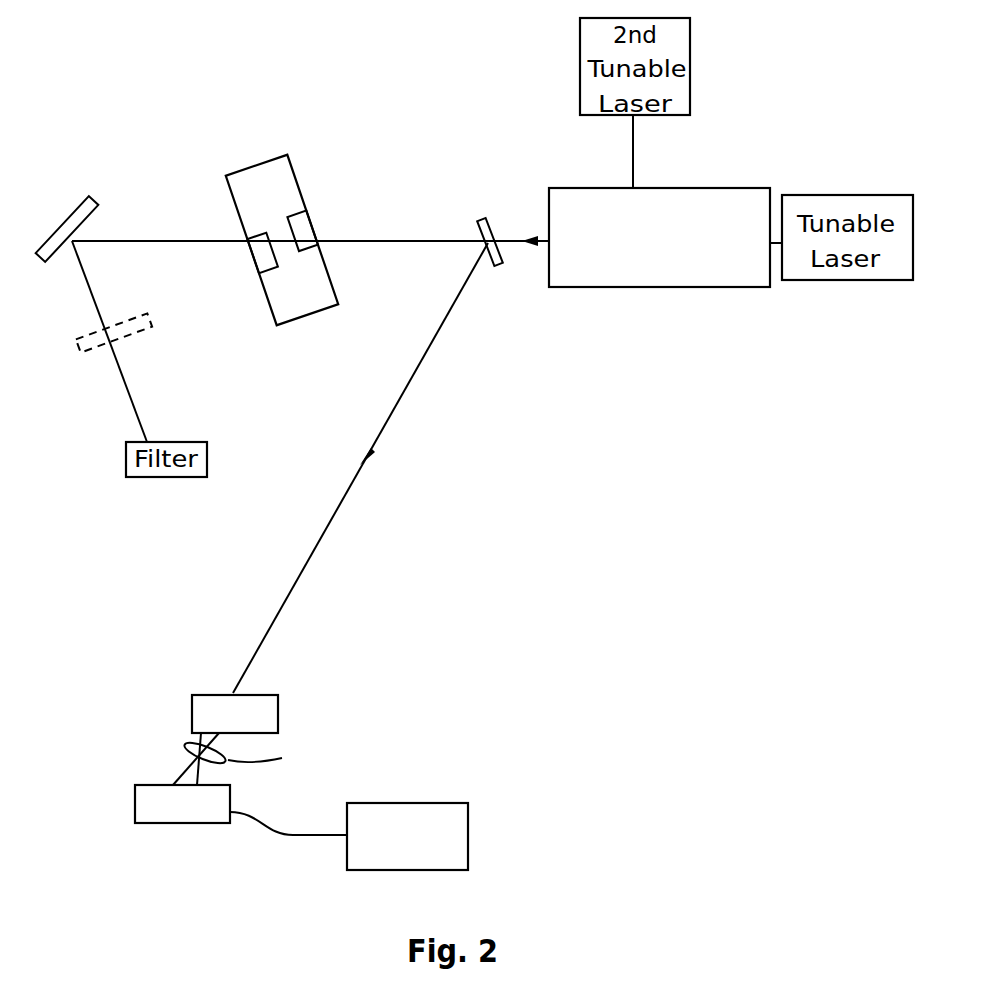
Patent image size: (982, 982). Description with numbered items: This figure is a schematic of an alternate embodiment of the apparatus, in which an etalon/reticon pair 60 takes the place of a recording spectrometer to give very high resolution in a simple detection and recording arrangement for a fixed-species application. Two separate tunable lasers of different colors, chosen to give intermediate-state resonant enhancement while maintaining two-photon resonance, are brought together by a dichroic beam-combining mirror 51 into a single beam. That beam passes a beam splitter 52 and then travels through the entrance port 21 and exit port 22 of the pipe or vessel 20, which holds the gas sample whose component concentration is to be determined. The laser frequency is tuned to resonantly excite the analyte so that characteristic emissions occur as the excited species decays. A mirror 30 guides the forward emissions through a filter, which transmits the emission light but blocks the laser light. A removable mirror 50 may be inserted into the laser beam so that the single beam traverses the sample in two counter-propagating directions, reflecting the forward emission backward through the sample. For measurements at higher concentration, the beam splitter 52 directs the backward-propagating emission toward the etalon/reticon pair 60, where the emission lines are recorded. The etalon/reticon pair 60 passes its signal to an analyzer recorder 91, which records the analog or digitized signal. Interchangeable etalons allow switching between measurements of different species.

The pipe or vessel 20 is at (277, 260).
The entrance port 21 is at (313, 231).
The exit port 22 is at (241, 245).
The mirror 30 is at (64, 221).
The removable mirror 50 is at (97, 353).
The dichroic beam-combining mirror 51 is at (627, 288).
The beam splitter 52 is at (500, 266).
The etalon/reticon pair 60 is at (192, 708).
The analyzer recorder 91 is at (468, 843).